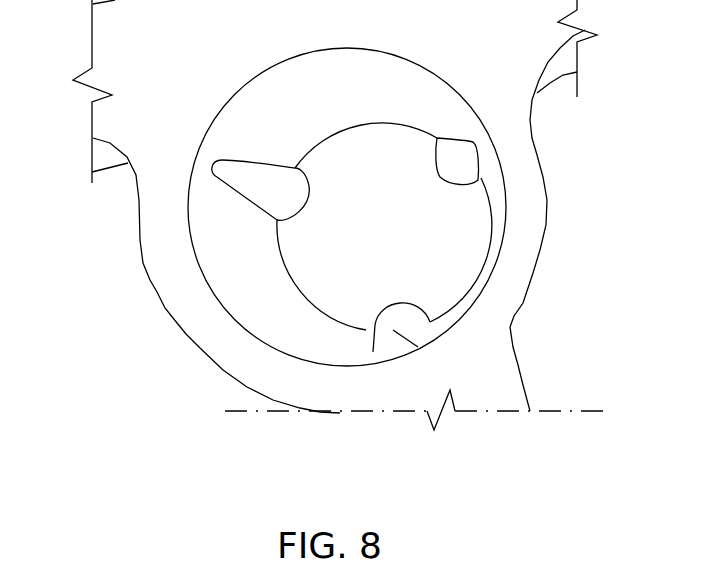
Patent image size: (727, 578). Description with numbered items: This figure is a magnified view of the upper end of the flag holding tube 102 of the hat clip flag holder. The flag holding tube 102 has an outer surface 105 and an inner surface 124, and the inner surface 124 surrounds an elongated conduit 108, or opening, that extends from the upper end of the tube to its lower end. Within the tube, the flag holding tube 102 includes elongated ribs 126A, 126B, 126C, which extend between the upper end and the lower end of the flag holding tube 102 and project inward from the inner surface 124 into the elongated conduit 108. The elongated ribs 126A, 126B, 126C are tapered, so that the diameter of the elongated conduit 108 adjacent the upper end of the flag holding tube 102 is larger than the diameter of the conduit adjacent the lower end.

The flag holding tube 102 is at (314, 230).
The outer surface 105 is at (331, 206).
The elongated conduit 108 is at (451, 226).
The inner surface 124 is at (271, 405).
The elongated rib 126A is at (498, 326).
The elongated rib 126B is at (179, 220).
The elongated rib 126C is at (537, 151).